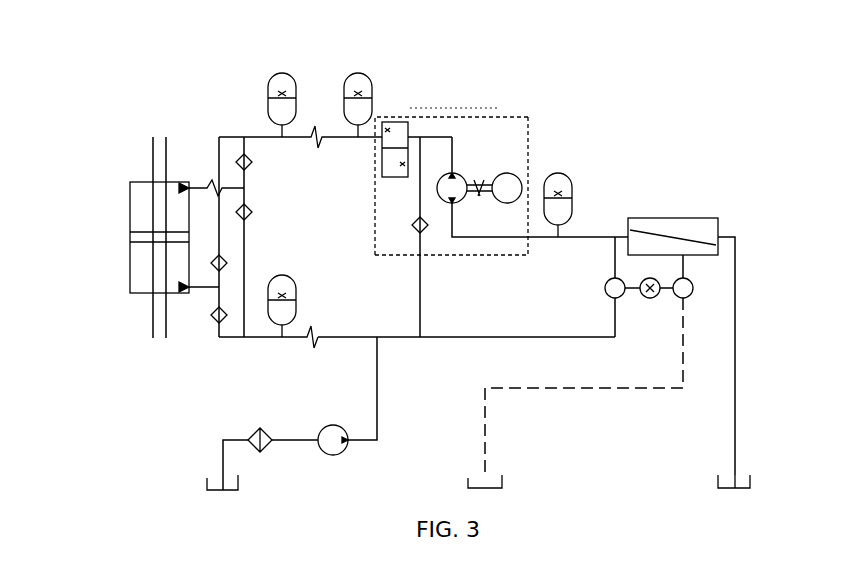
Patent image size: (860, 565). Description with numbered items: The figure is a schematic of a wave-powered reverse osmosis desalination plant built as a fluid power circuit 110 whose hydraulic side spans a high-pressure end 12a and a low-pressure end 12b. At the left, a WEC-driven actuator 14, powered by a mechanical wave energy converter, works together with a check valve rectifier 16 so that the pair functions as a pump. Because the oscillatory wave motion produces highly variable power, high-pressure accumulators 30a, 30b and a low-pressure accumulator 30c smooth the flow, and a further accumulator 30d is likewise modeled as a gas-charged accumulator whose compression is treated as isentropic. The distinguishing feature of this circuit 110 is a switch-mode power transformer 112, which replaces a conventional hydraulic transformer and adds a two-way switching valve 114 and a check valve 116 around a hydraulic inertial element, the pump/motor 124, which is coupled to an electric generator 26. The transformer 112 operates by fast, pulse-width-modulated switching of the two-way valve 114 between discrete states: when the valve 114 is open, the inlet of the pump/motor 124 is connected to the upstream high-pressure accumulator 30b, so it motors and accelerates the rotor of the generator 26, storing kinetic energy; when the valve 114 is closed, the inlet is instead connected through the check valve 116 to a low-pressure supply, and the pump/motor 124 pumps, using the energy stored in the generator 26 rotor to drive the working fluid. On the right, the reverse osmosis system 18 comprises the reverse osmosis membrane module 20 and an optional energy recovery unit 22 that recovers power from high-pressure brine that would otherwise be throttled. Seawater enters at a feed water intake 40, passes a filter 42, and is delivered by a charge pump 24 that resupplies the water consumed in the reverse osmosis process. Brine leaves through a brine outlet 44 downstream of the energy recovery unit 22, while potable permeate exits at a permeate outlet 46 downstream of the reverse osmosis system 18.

The fluid power circuit 110 is at (135, 122).
The WEC-driven actuator 14 is at (128, 205).
The check valve rectifier 16 is at (254, 220).
The high-pressure accumulator 30a is at (282, 70).
The high-pressure accumulator 30b is at (358, 70).
The low-pressure accumulator 30c is at (298, 304).
The accumulator 30d is at (573, 200).
The high-pressure end 12a is at (396, 100).
The low-pressure end 12b is at (458, 258).
The switch-mode power transformer 112 is at (456, 115).
The two-way switching valve 114 is at (376, 172).
The check valve 116 is at (408, 240).
The pump/motor 124 is at (470, 172).
The electric generator 26 is at (520, 178).
The reverse osmosis system 18 is at (688, 212).
The reverse osmosis membrane module 20 is at (712, 214).
The energy recovery unit 22 is at (650, 302).
The charge pump 24 is at (322, 428).
The filter 42 is at (252, 432).
The feed water intake 40 is at (206, 478).
The brine outlet 44 is at (468, 480).
The permeate outlet 46 is at (752, 476).